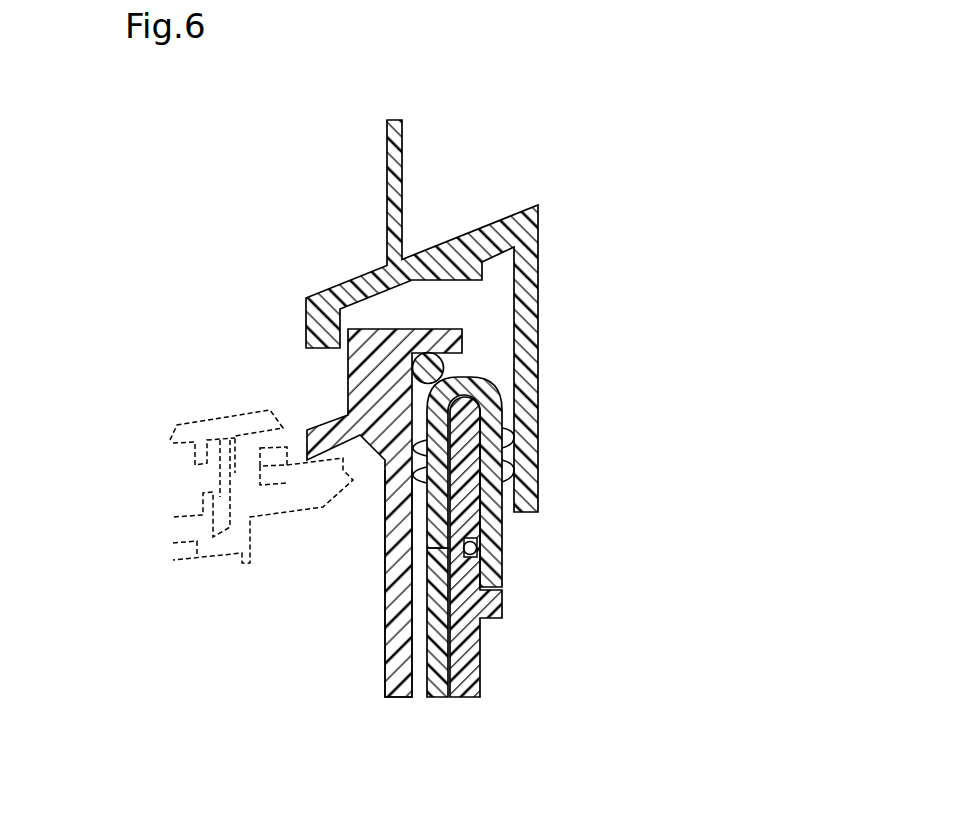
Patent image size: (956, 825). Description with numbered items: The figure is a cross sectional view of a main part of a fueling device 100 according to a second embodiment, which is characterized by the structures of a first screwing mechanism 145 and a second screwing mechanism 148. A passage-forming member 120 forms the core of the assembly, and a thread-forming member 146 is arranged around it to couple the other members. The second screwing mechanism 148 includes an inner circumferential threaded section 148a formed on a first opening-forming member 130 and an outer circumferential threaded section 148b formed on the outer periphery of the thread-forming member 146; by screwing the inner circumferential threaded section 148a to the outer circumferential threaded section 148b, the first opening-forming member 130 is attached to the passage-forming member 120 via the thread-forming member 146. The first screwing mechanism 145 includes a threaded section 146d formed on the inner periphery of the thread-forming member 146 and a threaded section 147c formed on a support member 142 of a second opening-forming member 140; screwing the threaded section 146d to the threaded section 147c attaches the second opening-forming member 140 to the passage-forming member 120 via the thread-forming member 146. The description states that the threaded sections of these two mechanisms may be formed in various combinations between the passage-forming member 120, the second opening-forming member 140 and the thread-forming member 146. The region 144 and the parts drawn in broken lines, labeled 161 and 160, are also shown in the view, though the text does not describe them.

The fueling device 100 is at (503, 190).
The passage-forming member 120 is at (442, 697).
The first opening-forming member 130 is at (540, 242).
The second opening-forming member 140 is at (348, 389).
The support member 142 is at (385, 648).
The space 144 is at (672, 526).
The first screwing mechanism 145 is at (600, 532).
The thread-forming member 146 is at (487, 382).
The threaded section 146d is at (500, 523).
The threaded section 147c is at (497, 581).
The second screwing mechanism 148 is at (650, 390).
The inner circumferential threaded section 148a is at (513, 437).
The outer circumferential threaded section 148b is at (513, 471).
The drive unit 160 is at (220, 486).
The lever 161 is at (172, 437).